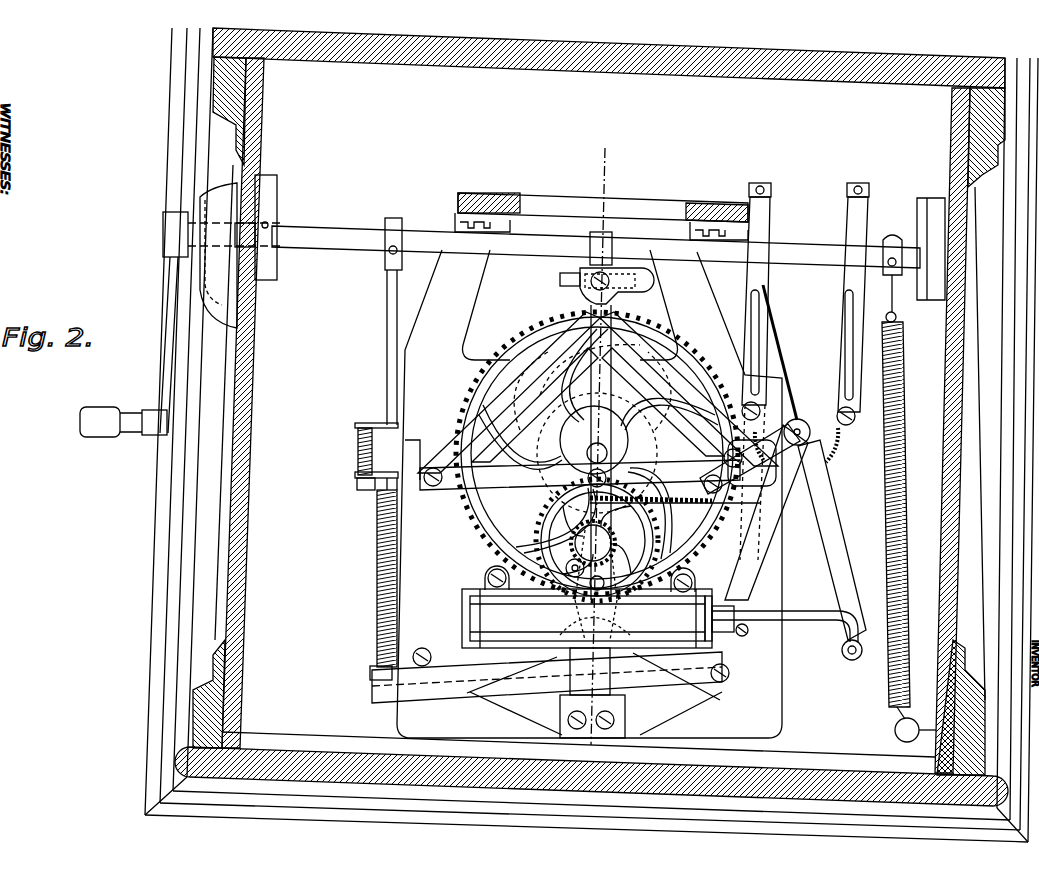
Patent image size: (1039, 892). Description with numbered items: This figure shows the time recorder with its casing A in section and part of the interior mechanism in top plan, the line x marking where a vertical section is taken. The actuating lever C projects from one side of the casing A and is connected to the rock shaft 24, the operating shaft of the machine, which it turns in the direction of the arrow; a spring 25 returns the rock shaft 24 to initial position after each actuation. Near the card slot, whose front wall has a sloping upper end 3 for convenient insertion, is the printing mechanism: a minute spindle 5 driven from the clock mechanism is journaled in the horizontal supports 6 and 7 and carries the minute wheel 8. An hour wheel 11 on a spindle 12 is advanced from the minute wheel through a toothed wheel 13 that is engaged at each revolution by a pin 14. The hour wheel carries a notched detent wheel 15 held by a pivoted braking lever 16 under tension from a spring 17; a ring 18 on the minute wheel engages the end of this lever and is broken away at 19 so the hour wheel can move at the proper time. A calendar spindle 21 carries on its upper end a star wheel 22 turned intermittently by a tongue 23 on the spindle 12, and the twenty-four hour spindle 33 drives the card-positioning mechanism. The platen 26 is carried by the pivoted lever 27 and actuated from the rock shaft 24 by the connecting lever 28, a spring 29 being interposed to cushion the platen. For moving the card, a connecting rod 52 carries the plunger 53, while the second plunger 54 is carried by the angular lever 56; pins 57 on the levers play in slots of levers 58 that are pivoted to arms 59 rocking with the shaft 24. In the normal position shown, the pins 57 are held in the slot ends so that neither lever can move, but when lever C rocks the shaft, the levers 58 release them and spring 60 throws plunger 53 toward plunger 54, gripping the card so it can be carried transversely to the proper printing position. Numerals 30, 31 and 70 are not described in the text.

The sloping upper end 3 is at (720, 656).
The minute spindle 5 is at (607, 416).
The horizontal support 6 is at (535, 405).
The horizontal support 7 is at (663, 402).
The minute wheel 8 is at (463, 387).
The hour wheel 11 is at (760, 556).
The spindle 12 is at (530, 568).
The toothed wheel 13 is at (530, 528).
The pin 14 is at (520, 606).
The notched detent wheel 15 is at (540, 542).
The pivoted braking lever 16 is at (689, 402).
The spring 17 is at (675, 489).
The ring 18 is at (597, 453).
The break in ring 19 is at (610, 453).
The spindle 21 is at (585, 627).
The star wheel 22 is at (735, 628).
The tongue 23 is at (500, 592).
The rock shaft 24 is at (346, 226).
The spring 25 is at (936, 353).
The platen 26 is at (520, 700).
The lever 27 is at (700, 720).
The connecting lever 28 is at (392, 309).
The spring 29 is at (376, 538).
The neck 30 is at (600, 664).
The link 31 is at (590, 622).
The twenty-four hour spindle 33 is at (720, 620).
The connecting rod 52 is at (842, 622).
The plunger 53 is at (726, 672).
The second plunger 54 is at (490, 630).
The angular lever 56 is at (806, 570).
The pins 57 is at (768, 408).
The levers 58 is at (755, 298).
The arms 59 is at (850, 226).
The spring 60 is at (812, 445).
The box rail 70 is at (575, 603).
The casing A is at (111, 475).
The actuating lever C is at (167, 278).
The section line x— x is at (600, 443).